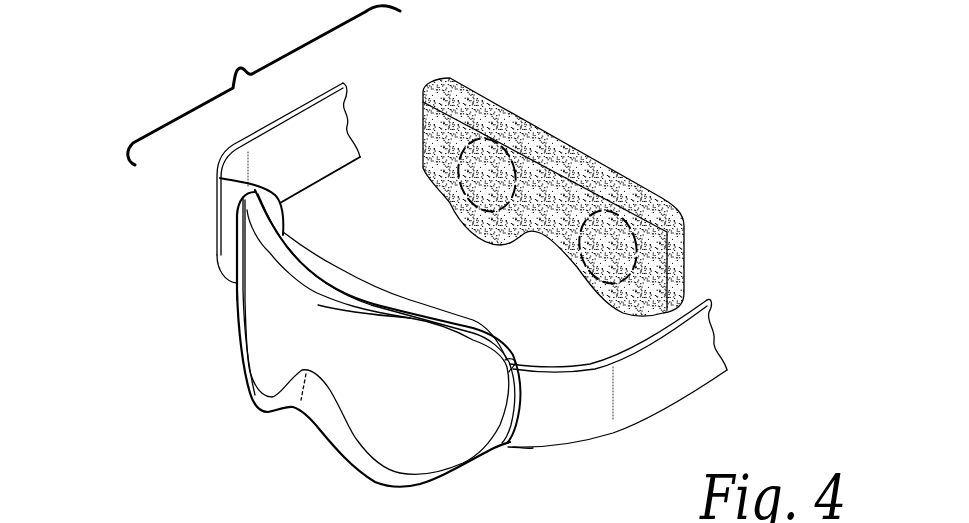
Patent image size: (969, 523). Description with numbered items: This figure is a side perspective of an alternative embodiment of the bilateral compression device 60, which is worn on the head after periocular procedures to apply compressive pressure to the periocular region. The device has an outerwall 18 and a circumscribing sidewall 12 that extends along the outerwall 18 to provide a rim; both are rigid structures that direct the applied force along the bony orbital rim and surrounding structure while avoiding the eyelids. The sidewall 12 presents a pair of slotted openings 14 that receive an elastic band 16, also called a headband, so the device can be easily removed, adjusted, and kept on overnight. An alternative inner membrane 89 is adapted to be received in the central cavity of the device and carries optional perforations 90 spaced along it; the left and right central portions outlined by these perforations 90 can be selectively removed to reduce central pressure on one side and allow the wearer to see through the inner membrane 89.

The bilateral compression device 60 is at (108, 88).
The circumscribing sidewall 12 is at (230, 180).
The slotted openings 14 is at (507, 445).
The elastic band 16 is at (320, 113).
The outerwall 18 is at (272, 264).
The inner membrane 89 is at (590, 160).
The perforations 90 is at (477, 138).